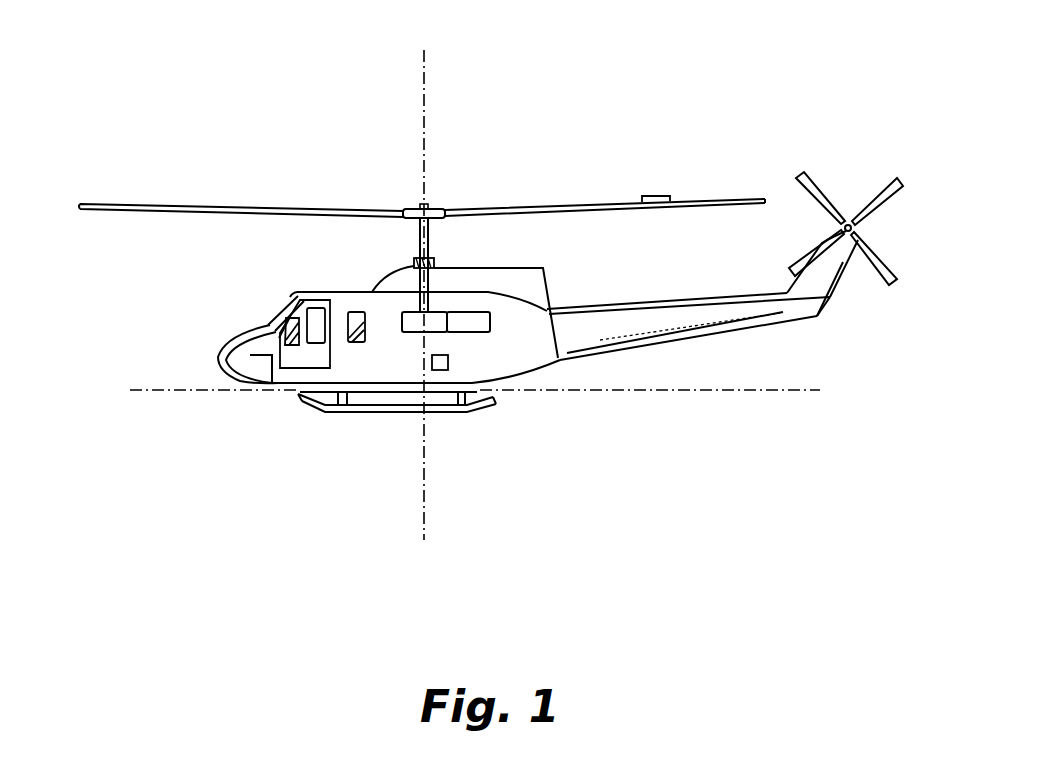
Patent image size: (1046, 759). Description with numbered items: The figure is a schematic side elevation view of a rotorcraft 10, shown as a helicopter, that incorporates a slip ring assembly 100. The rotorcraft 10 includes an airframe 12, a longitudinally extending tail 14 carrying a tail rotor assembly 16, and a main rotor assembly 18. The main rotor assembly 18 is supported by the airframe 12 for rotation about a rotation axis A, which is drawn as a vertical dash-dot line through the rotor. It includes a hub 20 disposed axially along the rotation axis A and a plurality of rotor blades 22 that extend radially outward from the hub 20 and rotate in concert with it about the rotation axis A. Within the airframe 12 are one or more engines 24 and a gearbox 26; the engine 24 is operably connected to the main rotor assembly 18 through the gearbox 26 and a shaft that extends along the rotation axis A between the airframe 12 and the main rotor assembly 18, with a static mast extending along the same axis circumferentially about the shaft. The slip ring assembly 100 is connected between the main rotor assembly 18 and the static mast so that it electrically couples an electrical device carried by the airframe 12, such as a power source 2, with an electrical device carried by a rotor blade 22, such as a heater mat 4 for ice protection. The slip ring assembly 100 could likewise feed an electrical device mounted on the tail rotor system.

The rotorcraft 10 is at (272, 104).
The rotation axis A is at (424, 66).
The slip ring assembly 100 is at (406, 208).
The main rotor assembly 18 is at (448, 206).
The hub 20 is at (397, 232).
The rotor blades 22 is at (710, 200).
The heater mat 4 is at (650, 196).
The tail rotor assembly 16 is at (847, 192).
The tail 14 is at (676, 325).
The engine 24 is at (472, 333).
The gearbox 26 is at (413, 327).
The power source 2 is at (443, 370).
The airframe 12 is at (327, 385).